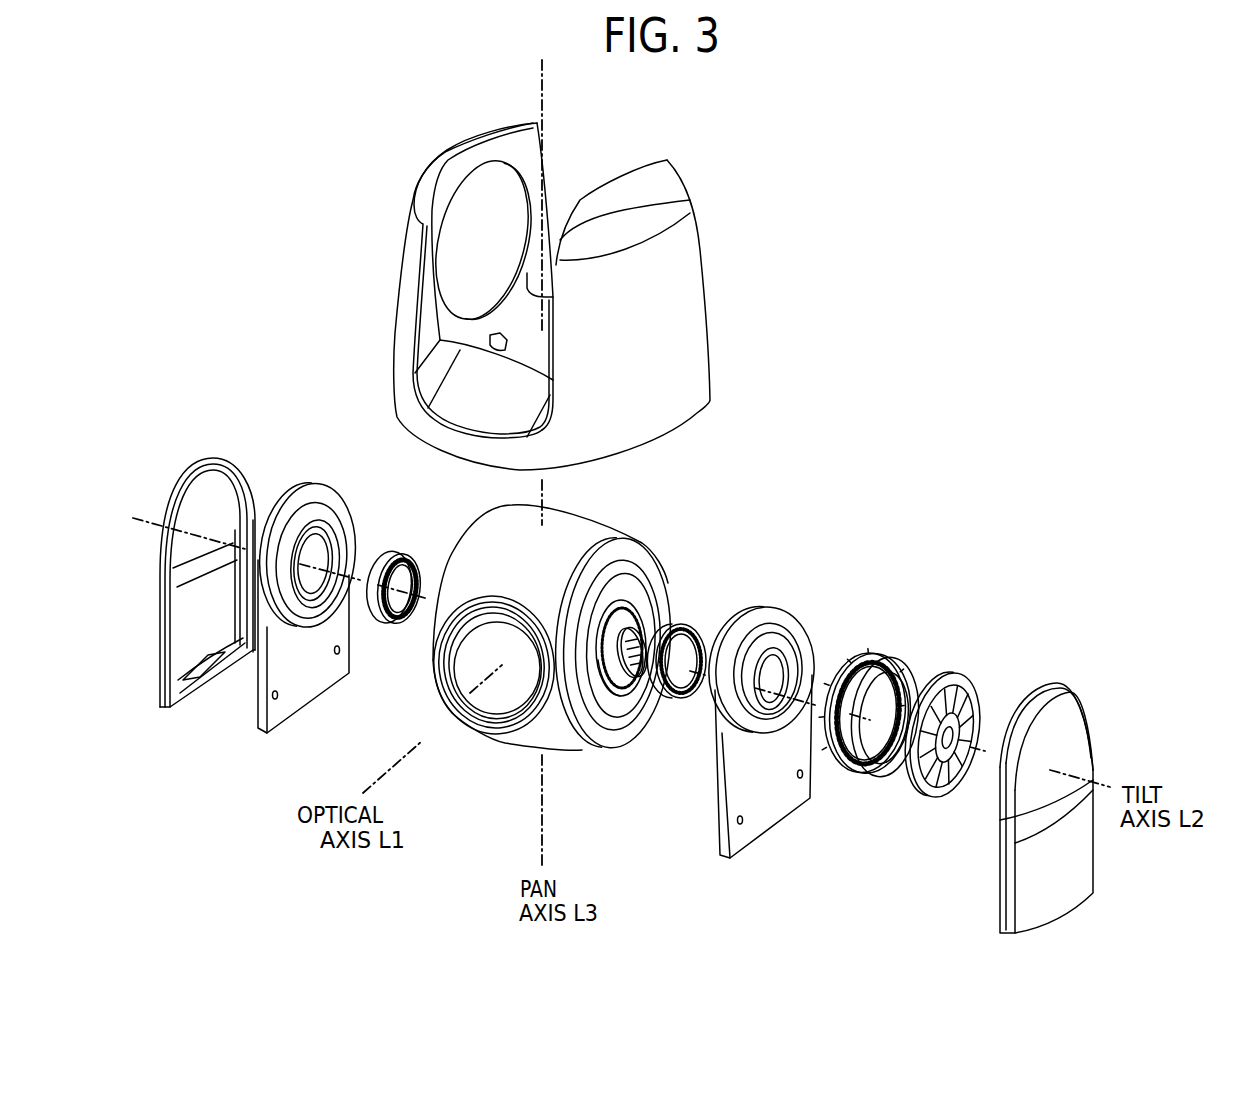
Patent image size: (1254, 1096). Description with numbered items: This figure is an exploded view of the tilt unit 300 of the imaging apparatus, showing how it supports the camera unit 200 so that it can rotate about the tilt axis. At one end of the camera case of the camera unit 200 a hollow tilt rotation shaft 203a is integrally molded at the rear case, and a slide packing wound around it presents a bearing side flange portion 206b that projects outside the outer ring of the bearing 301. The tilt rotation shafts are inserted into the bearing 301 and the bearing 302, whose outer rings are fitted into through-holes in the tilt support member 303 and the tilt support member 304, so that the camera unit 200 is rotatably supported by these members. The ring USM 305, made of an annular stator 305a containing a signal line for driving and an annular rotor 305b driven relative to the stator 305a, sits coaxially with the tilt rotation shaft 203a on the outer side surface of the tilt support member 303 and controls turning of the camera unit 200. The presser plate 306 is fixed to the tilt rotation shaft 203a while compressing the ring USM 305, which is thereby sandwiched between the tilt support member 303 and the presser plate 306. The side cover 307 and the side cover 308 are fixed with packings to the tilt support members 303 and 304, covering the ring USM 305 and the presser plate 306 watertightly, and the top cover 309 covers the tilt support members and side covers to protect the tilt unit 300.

The tilt unit 300 is at (1022, 239).
The top cover 309 is at (673, 187).
The camera unit 200 is at (563, 621).
The tilt rotation shaft 203a is at (618, 617).
The bearing side flange portion 206b is at (612, 680).
The bearing 301 is at (673, 630).
The bearing 302 is at (390, 553).
The tilt support member 303 is at (783, 613).
The tilt support member 304 is at (322, 490).
The ring USM 305 is at (845, 567).
The stator 305a is at (870, 652).
The rotor 305b is at (890, 657).
The presser plate 306 is at (967, 683).
The side cover 307 is at (1075, 717).
The side cover 308 is at (210, 460).